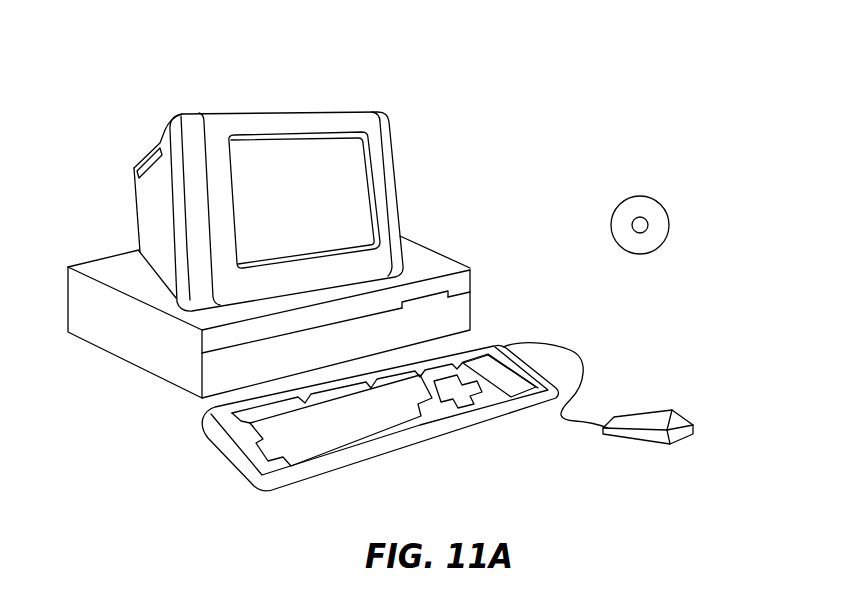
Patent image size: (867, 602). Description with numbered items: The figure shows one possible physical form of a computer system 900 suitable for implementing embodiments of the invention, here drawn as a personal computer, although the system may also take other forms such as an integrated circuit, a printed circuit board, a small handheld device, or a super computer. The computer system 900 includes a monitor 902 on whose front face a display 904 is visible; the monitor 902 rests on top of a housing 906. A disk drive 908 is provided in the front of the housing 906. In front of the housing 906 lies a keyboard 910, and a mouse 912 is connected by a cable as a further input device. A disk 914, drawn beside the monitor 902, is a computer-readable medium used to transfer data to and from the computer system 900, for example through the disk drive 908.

The computer system 900 is at (568, 96).
The monitor 902 is at (301, 211).
The display 904 is at (362, 167).
The housing 906 is at (294, 335).
The disk drive 908 is at (450, 290).
The keyboard 910 is at (380, 453).
The mouse 912 is at (685, 417).
The disk 914 is at (653, 197).